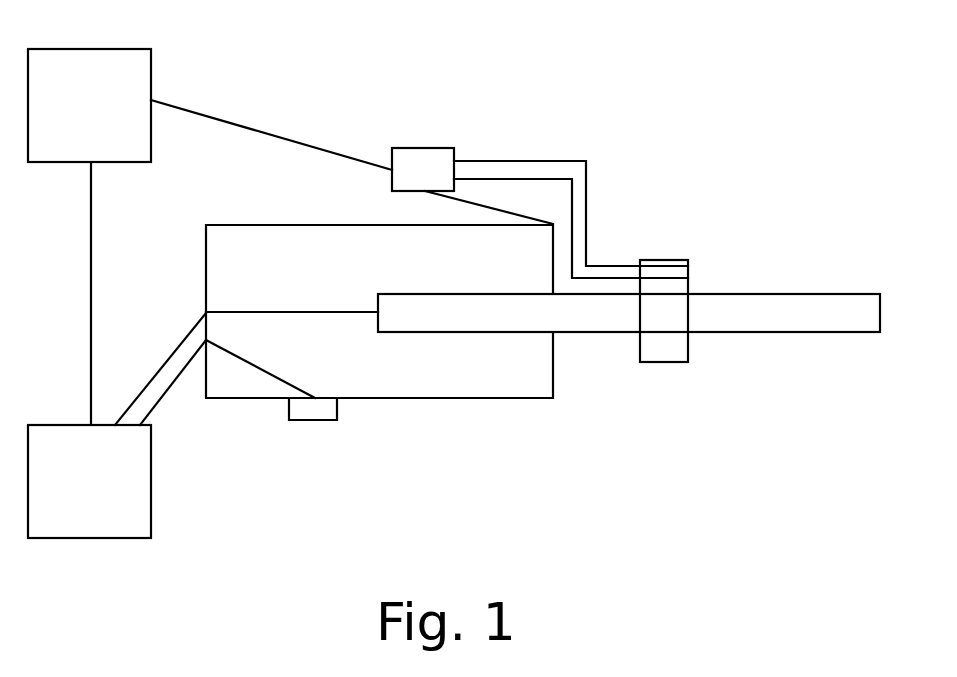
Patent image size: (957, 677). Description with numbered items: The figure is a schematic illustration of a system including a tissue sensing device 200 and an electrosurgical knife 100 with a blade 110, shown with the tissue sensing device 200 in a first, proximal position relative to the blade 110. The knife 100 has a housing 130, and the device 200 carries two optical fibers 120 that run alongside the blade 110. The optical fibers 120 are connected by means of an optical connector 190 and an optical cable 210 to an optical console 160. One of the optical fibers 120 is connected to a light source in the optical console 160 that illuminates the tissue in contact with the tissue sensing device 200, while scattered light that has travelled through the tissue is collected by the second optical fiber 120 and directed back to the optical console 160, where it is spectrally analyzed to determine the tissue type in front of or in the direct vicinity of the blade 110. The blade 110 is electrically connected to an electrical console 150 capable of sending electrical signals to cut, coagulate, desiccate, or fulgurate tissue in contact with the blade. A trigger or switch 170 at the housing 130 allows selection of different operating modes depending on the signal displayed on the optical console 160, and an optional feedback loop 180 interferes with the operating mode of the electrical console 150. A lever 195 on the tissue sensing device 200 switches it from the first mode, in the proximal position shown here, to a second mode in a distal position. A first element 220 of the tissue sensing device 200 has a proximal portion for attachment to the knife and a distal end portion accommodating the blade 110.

The electrosurgical knife 100 is at (497, 367).
The blade 110 is at (629, 313).
The optical fibers 120 is at (548, 219).
The housing 130 is at (379, 293).
The electrical console 150 is at (119, 481).
The optical console 160 is at (89, 82).
The trigger or switch 170 is at (313, 432).
The feedback loop 180 is at (120, 293).
The optical connector 190 is at (423, 150).
The lever 195 is at (436, 205).
The tissue sensing device 200 is at (573, 128).
The optical cable 210 is at (352, 158).
The first element 220 is at (666, 331).